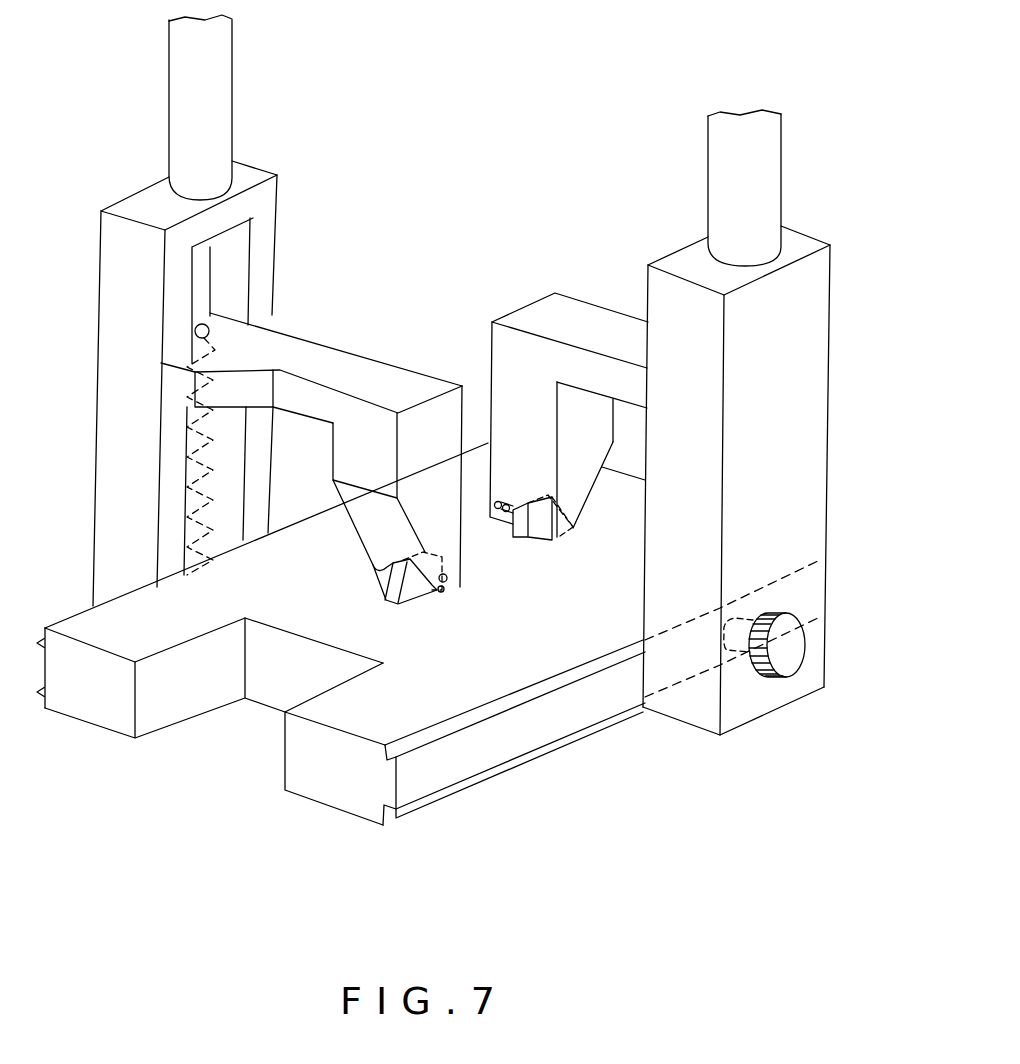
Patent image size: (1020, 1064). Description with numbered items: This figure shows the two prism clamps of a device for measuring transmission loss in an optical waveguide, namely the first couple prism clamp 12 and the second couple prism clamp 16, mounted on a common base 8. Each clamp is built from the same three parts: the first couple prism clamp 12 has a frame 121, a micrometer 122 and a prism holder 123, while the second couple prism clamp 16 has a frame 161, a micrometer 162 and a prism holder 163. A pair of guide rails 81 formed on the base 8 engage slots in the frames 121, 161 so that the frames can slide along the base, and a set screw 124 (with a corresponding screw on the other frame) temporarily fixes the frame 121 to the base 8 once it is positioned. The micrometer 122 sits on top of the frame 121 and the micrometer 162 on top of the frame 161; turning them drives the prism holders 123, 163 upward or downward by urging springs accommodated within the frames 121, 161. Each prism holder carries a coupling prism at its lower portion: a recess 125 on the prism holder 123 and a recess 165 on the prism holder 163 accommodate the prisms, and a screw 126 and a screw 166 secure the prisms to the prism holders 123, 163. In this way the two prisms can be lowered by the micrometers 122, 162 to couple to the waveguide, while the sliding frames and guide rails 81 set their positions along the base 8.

The base 8 is at (194, 702).
The guide rails 81 is at (430, 733).
The first couple prism clamp 12 is at (645, 168).
The frame 121 is at (830, 290).
The micrometer 122 is at (782, 177).
The prism holder 123 is at (570, 310).
The set screw 124 is at (787, 663).
The recess 125 is at (512, 503).
The screw 126 is at (512, 522).
The second couple prism clamp 16 is at (258, 126).
The frame 161 is at (277, 218).
The micrometer 162 is at (169, 88).
The prism holder 163 is at (343, 358).
The recess 165 is at (392, 562).
The screw 166 is at (454, 590).